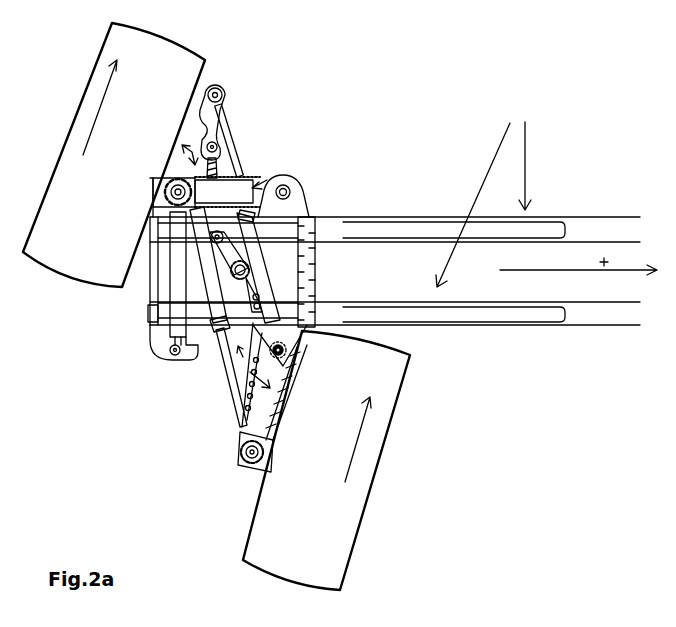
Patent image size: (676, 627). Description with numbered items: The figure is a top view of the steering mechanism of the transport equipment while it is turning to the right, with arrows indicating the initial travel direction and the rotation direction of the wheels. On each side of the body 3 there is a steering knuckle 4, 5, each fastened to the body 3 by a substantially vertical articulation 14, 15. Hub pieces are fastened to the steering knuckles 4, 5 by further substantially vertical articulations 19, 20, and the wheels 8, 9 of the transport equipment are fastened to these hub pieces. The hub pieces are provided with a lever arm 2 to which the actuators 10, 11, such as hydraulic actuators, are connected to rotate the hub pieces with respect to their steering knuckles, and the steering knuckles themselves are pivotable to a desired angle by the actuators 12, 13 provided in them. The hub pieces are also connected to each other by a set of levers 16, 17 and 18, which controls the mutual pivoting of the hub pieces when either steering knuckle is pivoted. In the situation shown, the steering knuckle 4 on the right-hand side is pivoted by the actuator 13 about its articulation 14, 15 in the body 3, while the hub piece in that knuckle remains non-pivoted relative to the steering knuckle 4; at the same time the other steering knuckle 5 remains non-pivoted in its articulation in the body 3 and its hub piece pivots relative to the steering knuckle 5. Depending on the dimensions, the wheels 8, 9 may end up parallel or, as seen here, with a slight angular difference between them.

The lever arm 2 is at (220, 105).
The body 3 is at (88, 420).
The steering knuckle 4 is at (277, 403).
The steering knuckle 5 is at (272, 177).
The wheel 8 is at (60, 263).
The wheel 9 is at (283, 502).
The actuator 10 is at (300, 267).
The actuator 11 is at (232, 130).
The actuator 12 is at (168, 265).
The actuator 13 is at (240, 413).
The articulation 14 is at (293, 192).
The articulation 15 is at (287, 350).
The lever 16 is at (222, 160).
The lever 17 is at (216, 345).
The lever 18 is at (237, 357).
The articulation 19 is at (165, 218).
The articulation 20 is at (243, 456).